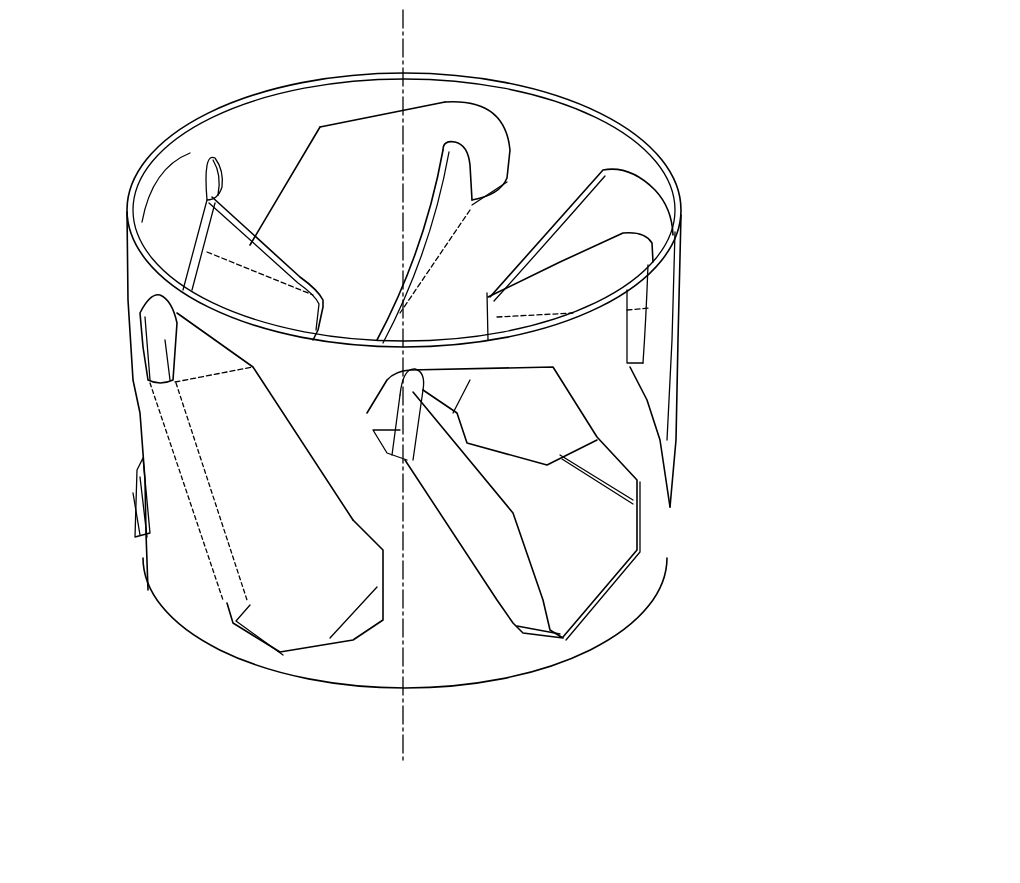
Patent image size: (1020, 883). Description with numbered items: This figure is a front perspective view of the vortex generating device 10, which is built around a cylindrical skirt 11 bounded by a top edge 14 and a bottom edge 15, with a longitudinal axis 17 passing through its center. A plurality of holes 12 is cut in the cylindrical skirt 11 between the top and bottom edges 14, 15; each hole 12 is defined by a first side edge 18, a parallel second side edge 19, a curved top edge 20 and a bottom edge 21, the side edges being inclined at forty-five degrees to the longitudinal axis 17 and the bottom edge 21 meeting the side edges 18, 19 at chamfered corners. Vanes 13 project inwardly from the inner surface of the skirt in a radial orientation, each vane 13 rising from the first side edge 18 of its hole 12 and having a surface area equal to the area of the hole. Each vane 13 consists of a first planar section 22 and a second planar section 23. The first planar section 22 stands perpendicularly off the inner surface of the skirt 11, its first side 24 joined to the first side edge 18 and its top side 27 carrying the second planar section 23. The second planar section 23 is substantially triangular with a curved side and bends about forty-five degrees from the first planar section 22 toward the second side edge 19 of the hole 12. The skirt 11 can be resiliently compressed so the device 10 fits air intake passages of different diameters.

The vortex generating device 10 is at (762, 101).
The cylindrical skirt 11 is at (167, 577).
The holes 12 is at (377, 160).
The vanes 13 is at (210, 198).
The top edge 14 is at (282, 87).
The bottom edge 15 is at (537, 670).
The longitudinal axis 17 is at (402, 712).
The first side edge 18 is at (162, 430).
The second side edge 19 is at (353, 520).
The curved top edge 20 is at (480, 113).
The bottom edge 21 is at (617, 583).
The first planar section 22 is at (218, 293).
The second planar section 23 is at (222, 242).
The first side 24 is at (193, 502).
The top side 27 is at (243, 268).